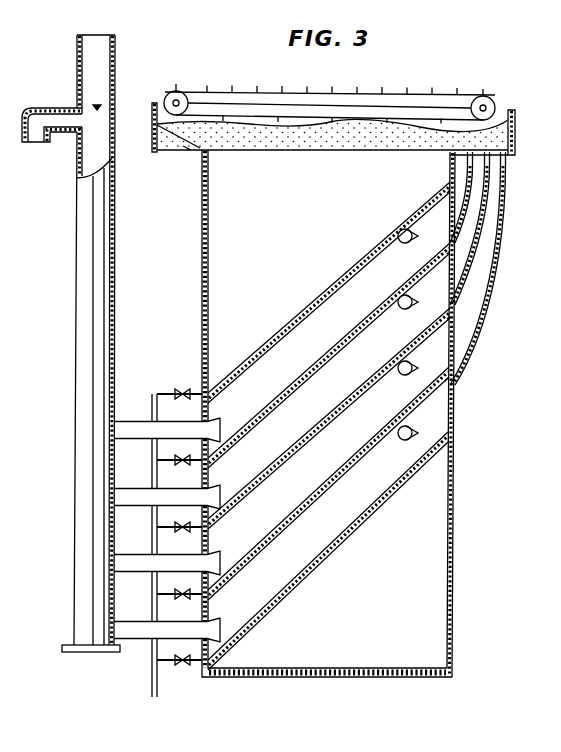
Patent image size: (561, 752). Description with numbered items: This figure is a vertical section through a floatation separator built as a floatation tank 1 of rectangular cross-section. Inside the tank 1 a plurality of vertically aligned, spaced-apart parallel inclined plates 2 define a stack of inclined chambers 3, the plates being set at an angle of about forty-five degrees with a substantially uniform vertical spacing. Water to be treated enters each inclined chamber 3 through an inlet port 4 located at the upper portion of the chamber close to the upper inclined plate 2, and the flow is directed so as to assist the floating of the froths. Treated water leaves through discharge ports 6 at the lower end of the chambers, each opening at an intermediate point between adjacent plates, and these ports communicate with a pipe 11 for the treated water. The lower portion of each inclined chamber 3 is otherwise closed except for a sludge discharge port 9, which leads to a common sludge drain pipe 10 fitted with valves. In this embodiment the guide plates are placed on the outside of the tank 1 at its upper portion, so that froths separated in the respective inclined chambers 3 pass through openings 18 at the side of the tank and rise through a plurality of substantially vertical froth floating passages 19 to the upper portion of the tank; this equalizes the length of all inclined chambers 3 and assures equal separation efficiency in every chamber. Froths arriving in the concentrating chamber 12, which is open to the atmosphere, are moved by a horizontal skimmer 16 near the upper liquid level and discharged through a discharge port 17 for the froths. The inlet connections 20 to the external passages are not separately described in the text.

The floatation tank 1 is at (453, 499).
The inclined plates 2 is at (312, 301).
The inclined chambers 3 is at (277, 372).
The inlet ports 4 is at (401, 241).
The discharge ports 6 is at (221, 426).
The sludge discharge port 9 is at (191, 400).
The sludge drain pipe 10 is at (151, 612).
The pipe for the treated water 11 is at (76, 517).
The concentrating chamber 12 is at (308, 160).
The horizontal skimmer 16 is at (261, 92).
The discharge port for the froths 17 is at (167, 150).
The openings 18 is at (450, 186).
The froth floating passages 19 is at (498, 251).
The duct inlets 20 is at (505, 190).